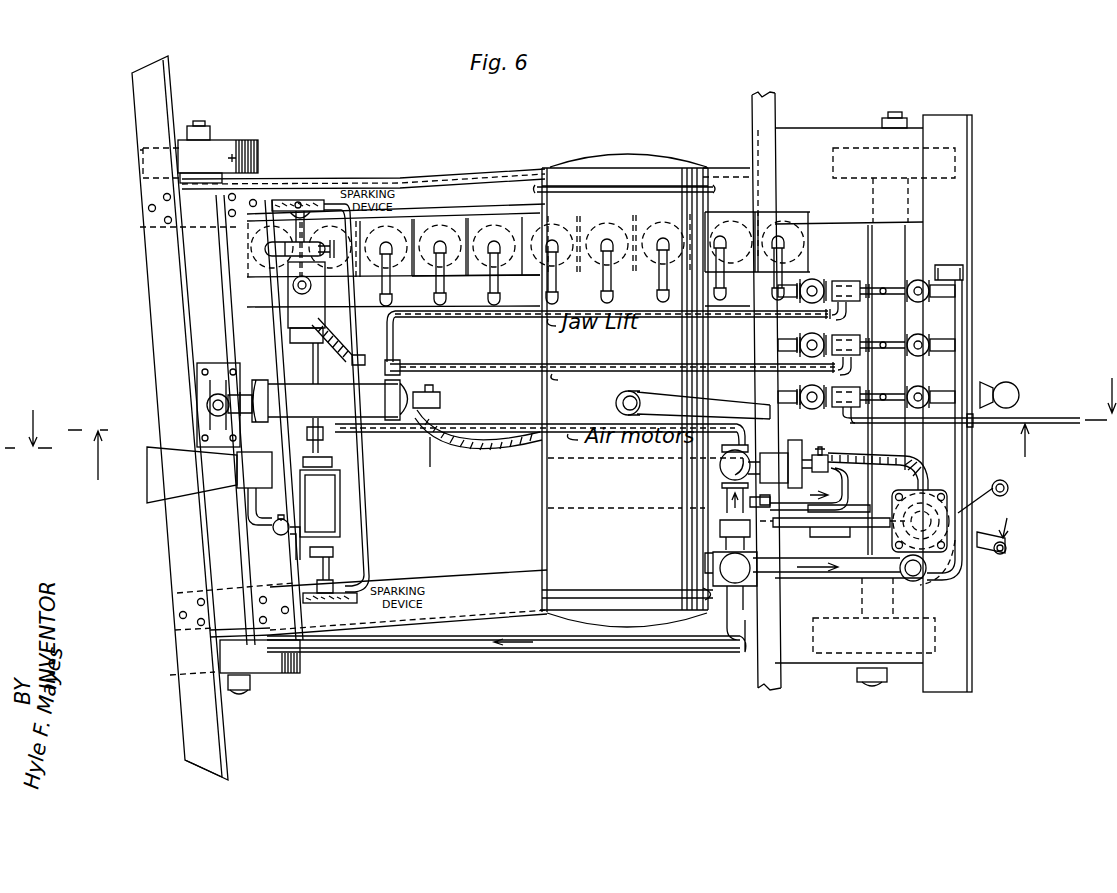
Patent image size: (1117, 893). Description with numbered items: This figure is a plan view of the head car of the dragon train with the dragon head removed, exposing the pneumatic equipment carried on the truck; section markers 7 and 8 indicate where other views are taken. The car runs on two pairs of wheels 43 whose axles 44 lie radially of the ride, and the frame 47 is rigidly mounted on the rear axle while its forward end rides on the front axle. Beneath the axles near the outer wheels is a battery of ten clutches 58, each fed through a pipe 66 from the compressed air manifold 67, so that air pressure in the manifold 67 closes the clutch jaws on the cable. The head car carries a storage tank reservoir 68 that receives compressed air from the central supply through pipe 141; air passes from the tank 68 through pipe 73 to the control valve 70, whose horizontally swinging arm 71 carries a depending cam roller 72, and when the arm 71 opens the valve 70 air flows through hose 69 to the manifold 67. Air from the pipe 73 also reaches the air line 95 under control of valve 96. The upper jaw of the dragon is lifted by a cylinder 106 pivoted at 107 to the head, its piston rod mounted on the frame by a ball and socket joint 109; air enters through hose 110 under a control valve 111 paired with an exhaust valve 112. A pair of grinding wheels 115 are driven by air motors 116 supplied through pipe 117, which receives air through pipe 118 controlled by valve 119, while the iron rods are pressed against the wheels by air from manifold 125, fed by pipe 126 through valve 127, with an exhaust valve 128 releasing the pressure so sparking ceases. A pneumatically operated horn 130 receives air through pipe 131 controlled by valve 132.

The wheels 43 is at (258, 147).
The axles 44 is at (900, 248).
The frame 47 is at (188, 687).
The clutches 58 is at (470, 222).
The pipe 66 is at (430, 290).
The compressed air manifold 67 is at (465, 295).
The storage tank reservoir 68 is at (556, 542).
The hose 69 is at (482, 452).
The control valve 70 is at (960, 553).
The horizontally swinging arm 71 is at (970, 513).
The cam roller 72 is at (1007, 490).
The pipe 73 is at (950, 325).
The air line 95 is at (1063, 423).
The valve 96 is at (920, 393).
The cylinder 106 is at (297, 385).
The pivot 107 is at (440, 402).
The ball and socket joint 109 is at (210, 400).
The hose 110 is at (457, 320).
The control valve 111 is at (913, 287).
The exhaust valve 112 is at (820, 280).
The grinding wheels 115 is at (330, 170).
The air motor 116 is at (288, 292).
The pipe 117 is at (487, 450).
The pipe 118 is at (833, 473).
The valve 119 is at (820, 452).
The manifold 125 is at (430, 437).
The pipe 126 is at (492, 365).
The valve 127 is at (920, 335).
The exhaust valve 128 is at (822, 335).
The pneumatically operated horn 130 is at (233, 480).
The pipe 131 is at (257, 518).
The valve 132 is at (280, 533).
The pipe 141 is at (723, 403).
The section line 7 is at (71, 455).
The section line 8 is at (560, 401).